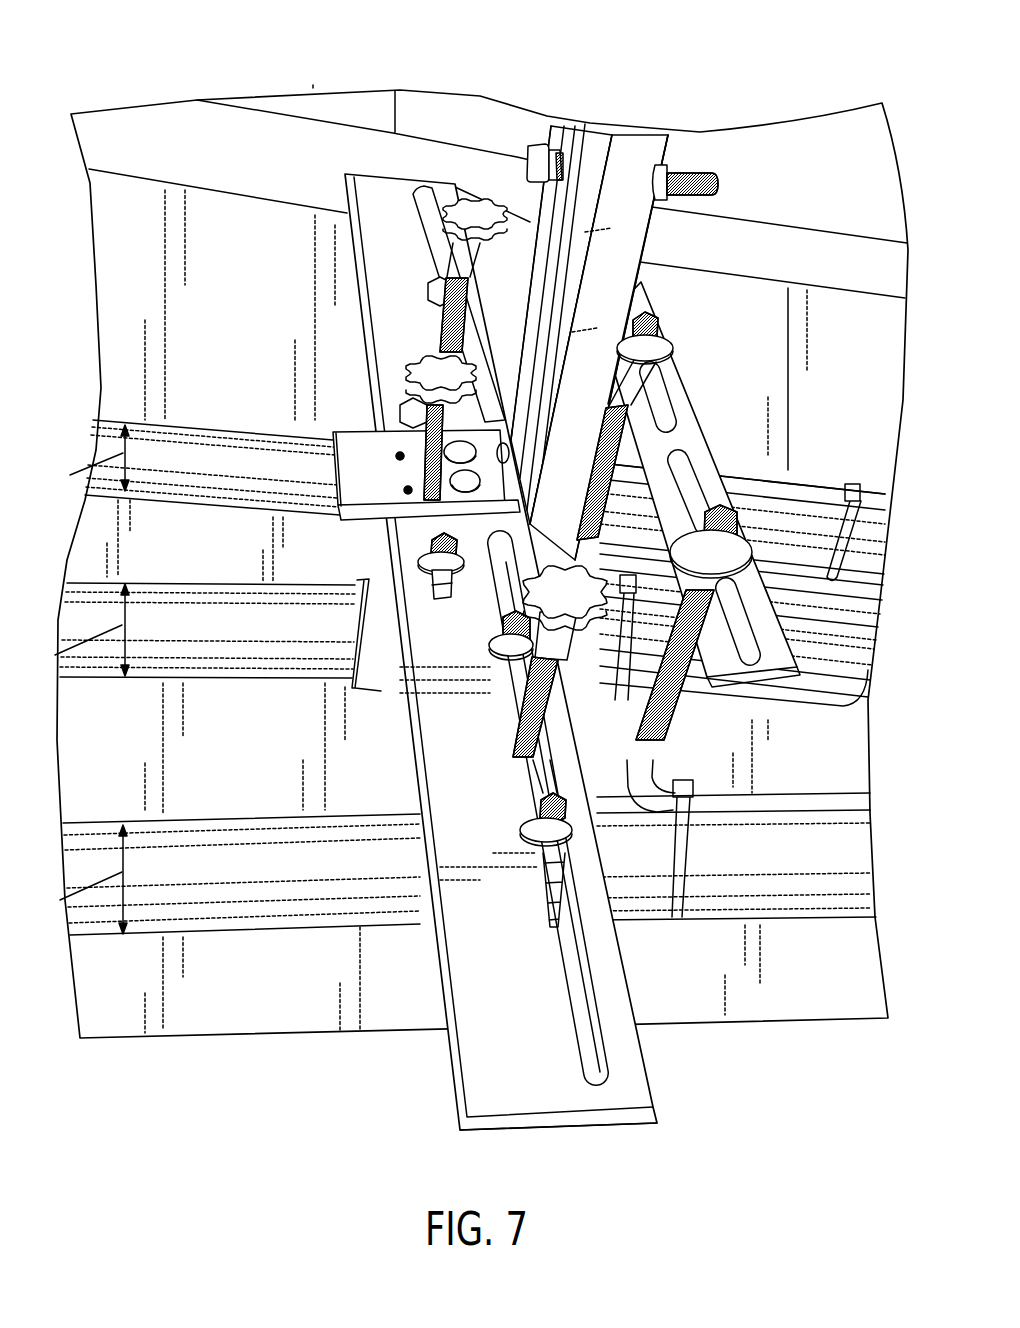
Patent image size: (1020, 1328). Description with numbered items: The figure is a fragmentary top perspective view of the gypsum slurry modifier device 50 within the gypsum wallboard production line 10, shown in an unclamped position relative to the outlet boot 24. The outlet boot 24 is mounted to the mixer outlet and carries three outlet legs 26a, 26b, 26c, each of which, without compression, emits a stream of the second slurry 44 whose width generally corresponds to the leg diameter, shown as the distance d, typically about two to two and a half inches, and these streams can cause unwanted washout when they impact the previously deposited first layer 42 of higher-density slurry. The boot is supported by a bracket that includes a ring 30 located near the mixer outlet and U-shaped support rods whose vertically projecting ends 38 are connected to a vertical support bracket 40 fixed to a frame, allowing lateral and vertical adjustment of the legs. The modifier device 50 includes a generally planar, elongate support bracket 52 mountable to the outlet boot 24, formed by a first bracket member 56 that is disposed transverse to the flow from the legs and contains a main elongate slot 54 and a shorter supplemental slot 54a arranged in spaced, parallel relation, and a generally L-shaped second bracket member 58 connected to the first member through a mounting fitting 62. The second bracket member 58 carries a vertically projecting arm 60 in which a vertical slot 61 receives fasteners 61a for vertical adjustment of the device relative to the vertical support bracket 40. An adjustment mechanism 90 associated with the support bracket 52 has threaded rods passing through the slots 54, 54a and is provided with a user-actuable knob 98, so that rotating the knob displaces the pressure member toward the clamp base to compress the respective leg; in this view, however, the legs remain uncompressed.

The gypsum wallboard production line 10 is at (313, 90).
The outlet boot 24 is at (798, 487).
The outlet leg 26a is at (865, 550).
The outlet leg 26b is at (853, 660).
The outlet leg 26c is at (873, 853).
The ring 30 is at (693, 433).
The vertically projecting end 38 is at (652, 750).
The vertical support bracket 40 is at (643, 137).
The first layer 42 is at (239, 334).
The second slurry 44 is at (85, 447).
The gypsum slurry modifier device 50 is at (345, 219).
The support bracket 52 is at (528, 1110).
The main slot 54 is at (607, 1083).
The supplemental slot 54a is at (440, 600).
The first bracket member 56 is at (470, 1053).
The second bracket member 58 is at (590, 123).
The vertically projecting arm 60 is at (545, 285).
The vertical slot 61 is at (543, 210).
The fastener 61a is at (720, 183).
The mounting fitting 62 is at (503, 357).
The adjustment mechanism 90 is at (507, 702).
The user-actuable knob 98 is at (420, 357).